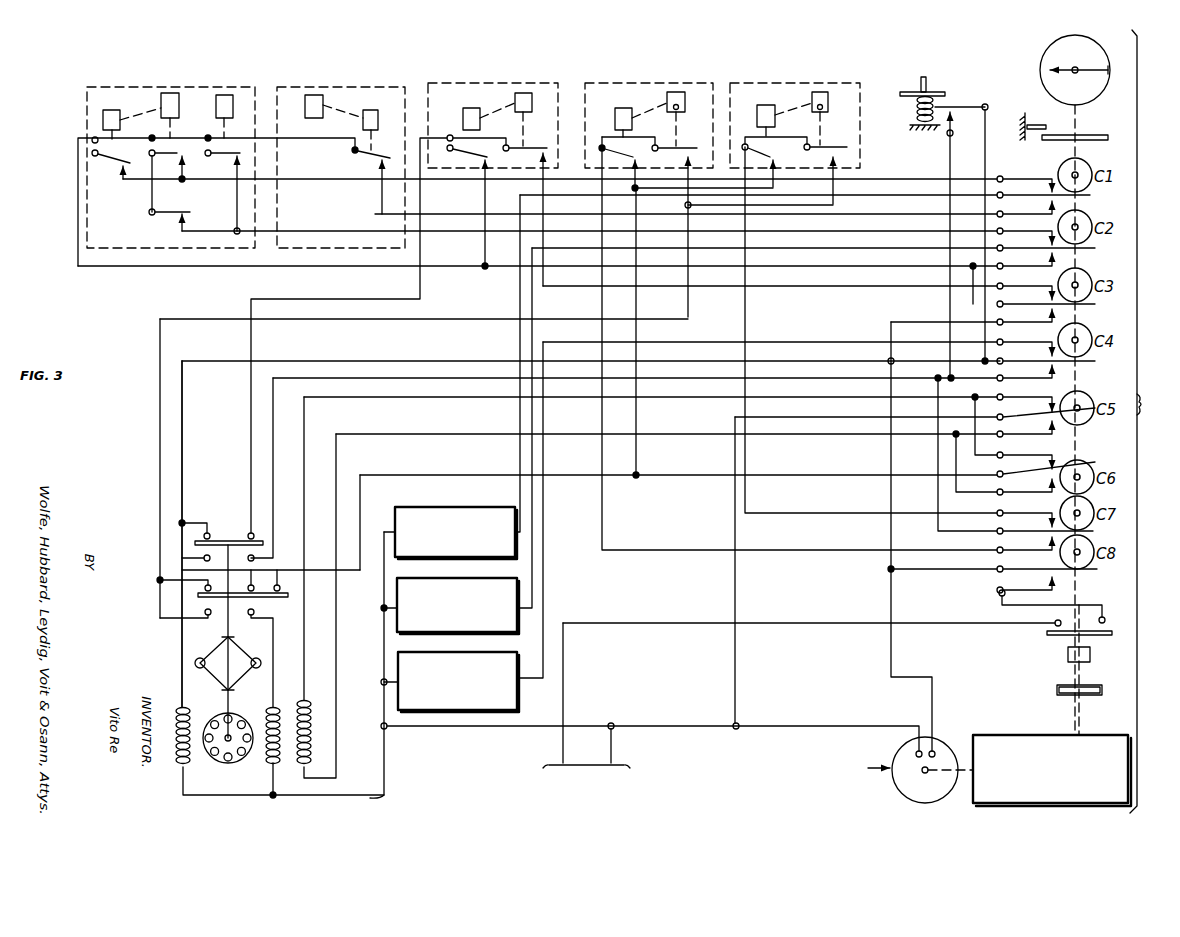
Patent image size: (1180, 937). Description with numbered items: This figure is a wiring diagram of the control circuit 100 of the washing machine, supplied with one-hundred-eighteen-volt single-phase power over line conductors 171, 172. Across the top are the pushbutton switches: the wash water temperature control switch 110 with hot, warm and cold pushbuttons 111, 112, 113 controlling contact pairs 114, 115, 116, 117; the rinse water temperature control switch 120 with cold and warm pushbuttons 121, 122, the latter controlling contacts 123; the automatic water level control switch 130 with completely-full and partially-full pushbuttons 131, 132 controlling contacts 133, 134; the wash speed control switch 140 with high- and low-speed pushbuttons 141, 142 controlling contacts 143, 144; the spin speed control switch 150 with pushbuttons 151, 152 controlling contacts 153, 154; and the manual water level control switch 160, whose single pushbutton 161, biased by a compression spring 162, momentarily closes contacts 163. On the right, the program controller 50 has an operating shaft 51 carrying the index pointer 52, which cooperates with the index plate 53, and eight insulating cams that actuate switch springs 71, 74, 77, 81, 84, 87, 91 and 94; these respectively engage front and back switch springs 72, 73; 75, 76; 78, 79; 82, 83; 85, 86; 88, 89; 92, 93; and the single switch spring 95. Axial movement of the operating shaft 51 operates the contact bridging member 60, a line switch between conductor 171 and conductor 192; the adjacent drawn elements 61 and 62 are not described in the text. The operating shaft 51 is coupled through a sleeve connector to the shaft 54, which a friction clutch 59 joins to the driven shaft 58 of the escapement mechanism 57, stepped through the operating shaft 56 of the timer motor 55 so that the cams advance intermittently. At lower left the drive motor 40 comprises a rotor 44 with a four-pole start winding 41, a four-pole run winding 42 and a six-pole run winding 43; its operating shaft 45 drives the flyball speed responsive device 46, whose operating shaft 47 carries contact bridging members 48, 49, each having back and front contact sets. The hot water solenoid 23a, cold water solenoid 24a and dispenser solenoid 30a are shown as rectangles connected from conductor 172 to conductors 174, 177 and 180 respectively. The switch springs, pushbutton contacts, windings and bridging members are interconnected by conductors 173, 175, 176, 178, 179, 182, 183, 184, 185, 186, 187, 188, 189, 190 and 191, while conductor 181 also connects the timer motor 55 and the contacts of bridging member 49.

The drive motor 40 is at (272, 756).
The 4-pole start winding 41 is at (190, 714).
The 4-pole run winding 42 is at (304, 700).
The 6-pole run winding 43 is at (266, 763).
The rotor 44 is at (228, 770).
The operating shaft 45 is at (232, 691).
The speed responsive device 46 is at (237, 672).
The operating shaft 47 is at (246, 623).
The contact bridging member 48 is at (286, 600).
The contact bridging member 49 is at (224, 538).
The program controller 50 is at (1168, 429).
The operating shaft 51 is at (1078, 122).
The index pointer 52 is at (1085, 67).
The index plate 53 is at (1042, 78).
The shaft 54 is at (1088, 669).
The timer motor 55 is at (905, 750).
The operating shaft 56 is at (958, 765).
The escapement mechanism 57 is at (1052, 770).
The driven shaft 58 is at (1070, 711).
The friction clutch 59 is at (1057, 692).
The contact bridging member 60 is at (1100, 636).
The cam follower plate 61 is at (1096, 135).
The stop 62 is at (1035, 117).
The switch spring 71 is at (1043, 189).
The front switch spring 72 is at (1024, 177).
The back switch spring 73 is at (1024, 208).
The switch spring 74 is at (1046, 242).
The front switch spring 75 is at (1024, 230).
The back switch spring 76 is at (1024, 260).
The switch spring 77 is at (1046, 298).
The front switch spring 78 is at (1024, 285).
The back switch spring 79 is at (971, 316).
The switch spring 81 is at (1046, 355).
The front switch spring 82 is at (1024, 341).
The back switch spring 83 is at (1024, 372).
The switch spring 84 is at (1046, 411).
The front switch spring 85 is at (1024, 396).
The back switch spring 86 is at (1024, 428).
The switch spring 87 is at (1046, 467).
The front switch spring 88 is at (1012, 431).
The back switch spring 89 is at (1002, 463).
The switch spring 91 is at (1014, 454).
The front switch spring 92 is at (1024, 512).
The back switch spring 93 is at (1024, 543).
The switch spring 94 is at (995, 563).
The switch spring 95 is at (1024, 584).
The control circuit 100 is at (113, 306).
The wash water temperature control switch 110 is at (259, 82).
The hot pushbutton 111 is at (110, 109).
The warm pushbutton 112 is at (161, 103).
The cold pushbutton 113 is at (216, 104).
The pair of contacts 114 is at (121, 164).
The pair of contacts 115 is at (179, 162).
The pair of contacts 116 is at (152, 238).
The pair of contacts 117 is at (235, 160).
The rinse water temperature control switch 120 is at (388, 82).
The cold pushbutton 121 is at (308, 109).
The warm pushbutton 122 is at (382, 116).
The pair of contacts 123 is at (378, 164).
The automatic water level control switch 130 is at (541, 82).
The completely-full pushbutton 131 is at (462, 112).
The partially-full pushbutton 132 is at (515, 101).
The pair of contacts 133 is at (490, 160).
The pair of contacts 134 is at (546, 150).
The wash speed control switch 140 is at (703, 82).
The high-speed pushbutton 141 is at (615, 111).
The low-speed pushbutton 142 is at (667, 100).
The pair of contacts 143 is at (636, 159).
The pair of contacts 144 is at (694, 150).
The spin speed control switch 150 is at (849, 82).
The high-speed pushbutton 151 is at (770, 111).
The low-speed pushbutton 152 is at (813, 100).
The pair of contacts 153 is at (774, 159).
The pair of contacts 154 is at (845, 150).
The manual water level control switch 160 is at (962, 85).
The pushbutton 161 is at (908, 90).
The compression spring 162 is at (912, 112).
The pair of contacts 163 is at (955, 113).
The line conductor 171 is at (822, 621).
The line conductor 172 is at (818, 416).
The conductor 173 is at (858, 180).
The conductor 174 is at (858, 197).
The conductor 175 is at (858, 215).
The conductor 176 is at (858, 232).
The conductor 177 is at (858, 250).
The conductor 178 is at (858, 268).
The conductor 179 is at (858, 288).
The conductor 180 is at (818, 341).
The conductor 181 is at (985, 118).
The conductor 182 is at (818, 378).
The conductor 183 is at (818, 396).
The conductor 184 is at (818, 433).
The conductor 185 is at (816, 472).
The conductor 186 is at (816, 512).
The conductor 187 is at (816, 550).
The conductor 188 is at (542, 335).
The conductor 189 is at (160, 440).
The conductor 190 is at (182, 657).
The conductor 191 is at (273, 690).
The conductor 192 is at (1000, 598).
The hot water solenoid 23a is at (447, 502).
The cold water solenoid 24a is at (428, 579).
The dispenser solenoid 30a is at (443, 653).